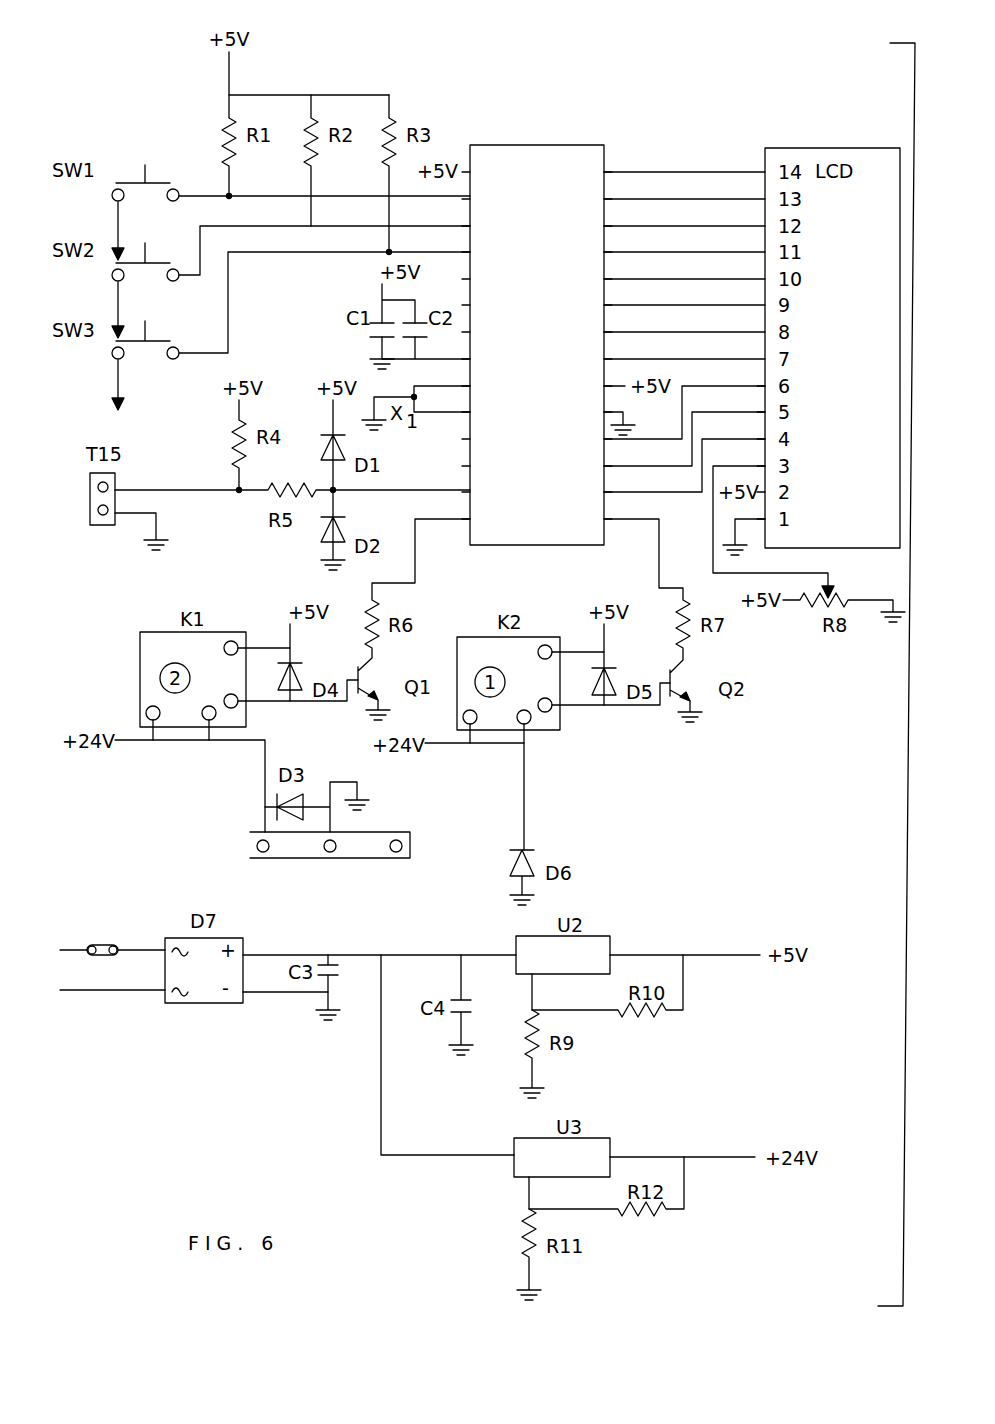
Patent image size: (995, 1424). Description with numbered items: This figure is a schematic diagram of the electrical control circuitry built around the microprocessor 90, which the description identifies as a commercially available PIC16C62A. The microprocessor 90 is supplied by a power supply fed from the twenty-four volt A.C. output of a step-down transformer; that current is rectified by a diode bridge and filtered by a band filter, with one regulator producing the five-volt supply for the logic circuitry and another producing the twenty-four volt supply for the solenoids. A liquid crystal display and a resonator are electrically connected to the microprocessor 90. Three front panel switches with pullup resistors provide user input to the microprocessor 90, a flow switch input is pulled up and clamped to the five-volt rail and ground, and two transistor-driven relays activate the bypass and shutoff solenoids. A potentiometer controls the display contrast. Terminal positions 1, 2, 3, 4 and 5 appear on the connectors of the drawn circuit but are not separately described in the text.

The microprocessor 90 is at (537, 345).
The terminal 1 is at (396, 865).
The terminal 2 is at (330, 865).
The terminal 3 is at (263, 865).
The T15 pin 4 is at (87, 512).
The T15 pin 5 is at (87, 488).